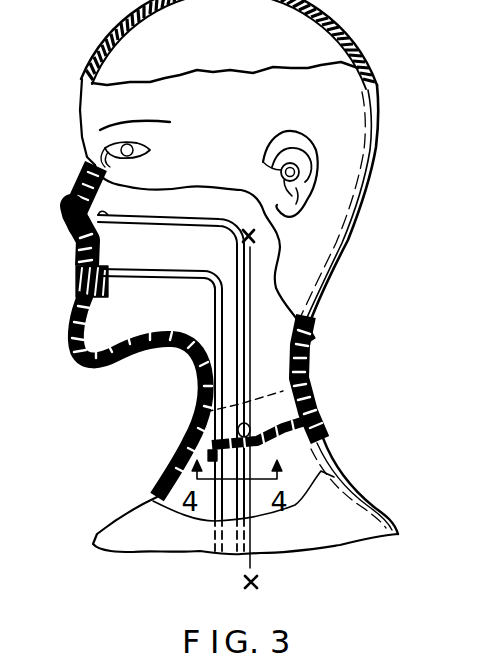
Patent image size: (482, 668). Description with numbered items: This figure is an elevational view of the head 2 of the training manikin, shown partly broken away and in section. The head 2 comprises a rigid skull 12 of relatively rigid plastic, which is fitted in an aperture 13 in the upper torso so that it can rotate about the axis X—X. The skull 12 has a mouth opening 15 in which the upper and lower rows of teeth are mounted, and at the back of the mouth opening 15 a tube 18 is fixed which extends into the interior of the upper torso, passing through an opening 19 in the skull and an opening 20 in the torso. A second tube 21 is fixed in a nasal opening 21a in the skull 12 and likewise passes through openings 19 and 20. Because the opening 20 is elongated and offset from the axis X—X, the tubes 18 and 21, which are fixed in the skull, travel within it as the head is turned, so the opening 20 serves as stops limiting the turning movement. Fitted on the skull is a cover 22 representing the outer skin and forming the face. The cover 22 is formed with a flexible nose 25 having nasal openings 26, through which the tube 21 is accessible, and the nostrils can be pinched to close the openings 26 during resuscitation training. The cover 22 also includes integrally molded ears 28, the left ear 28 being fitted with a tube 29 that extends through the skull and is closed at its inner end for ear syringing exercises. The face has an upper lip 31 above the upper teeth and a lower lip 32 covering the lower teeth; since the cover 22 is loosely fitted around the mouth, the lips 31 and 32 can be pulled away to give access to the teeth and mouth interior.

The head 2 is at (340, 277).
The rigid skull 12 is at (290, 348).
The aperture 13 is at (308, 392).
The mouth opening 15 is at (74, 293).
The tube 18 is at (149, 275).
The opening 19 is at (238, 429).
The opening 20 is at (254, 453).
The tube 21 is at (198, 220).
The nasal opening 21a is at (103, 229).
The cover 22 is at (340, 19).
The nose 25 is at (76, 194).
The nasal openings 26 is at (64, 240).
The ears 28 is at (300, 131).
The tube 29 is at (280, 170).
The upper lip 31 is at (74, 266).
The lower lip 32 is at (74, 300).